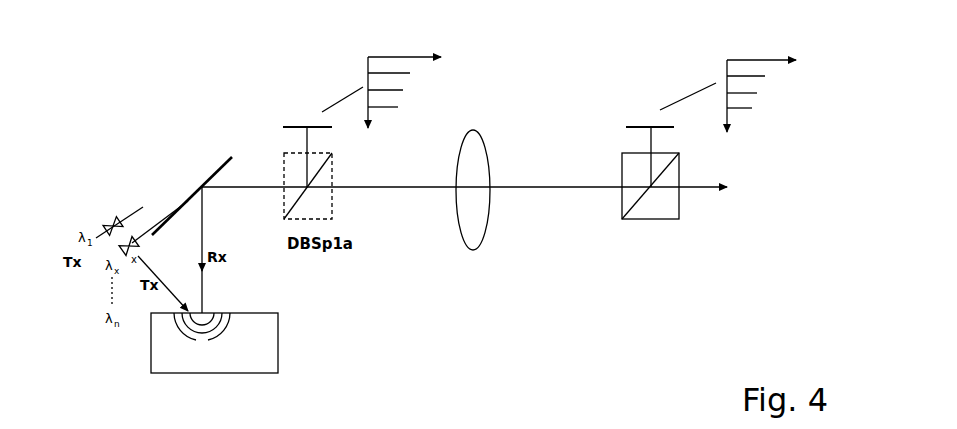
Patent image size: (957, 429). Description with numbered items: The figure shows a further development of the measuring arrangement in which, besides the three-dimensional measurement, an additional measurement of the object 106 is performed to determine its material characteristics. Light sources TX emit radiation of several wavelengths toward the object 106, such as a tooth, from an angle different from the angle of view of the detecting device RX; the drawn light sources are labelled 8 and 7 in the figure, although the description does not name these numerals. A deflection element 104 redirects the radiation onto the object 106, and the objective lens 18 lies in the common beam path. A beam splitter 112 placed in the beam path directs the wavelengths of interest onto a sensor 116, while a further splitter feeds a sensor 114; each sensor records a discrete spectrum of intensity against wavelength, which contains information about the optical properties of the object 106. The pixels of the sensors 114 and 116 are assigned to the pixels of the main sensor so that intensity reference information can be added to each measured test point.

The deflection element 104 is at (218, 162).
The object 106 is at (278, 344).
The sensor 114 is at (288, 122).
The sensor 116 is at (632, 125).
The beam splitter 112 is at (680, 215).
The objective lens 18 is at (477, 228).
The light source for wavelength λ1 8 is at (115, 221).
The light source for wavelength λx 7 is at (150, 229).